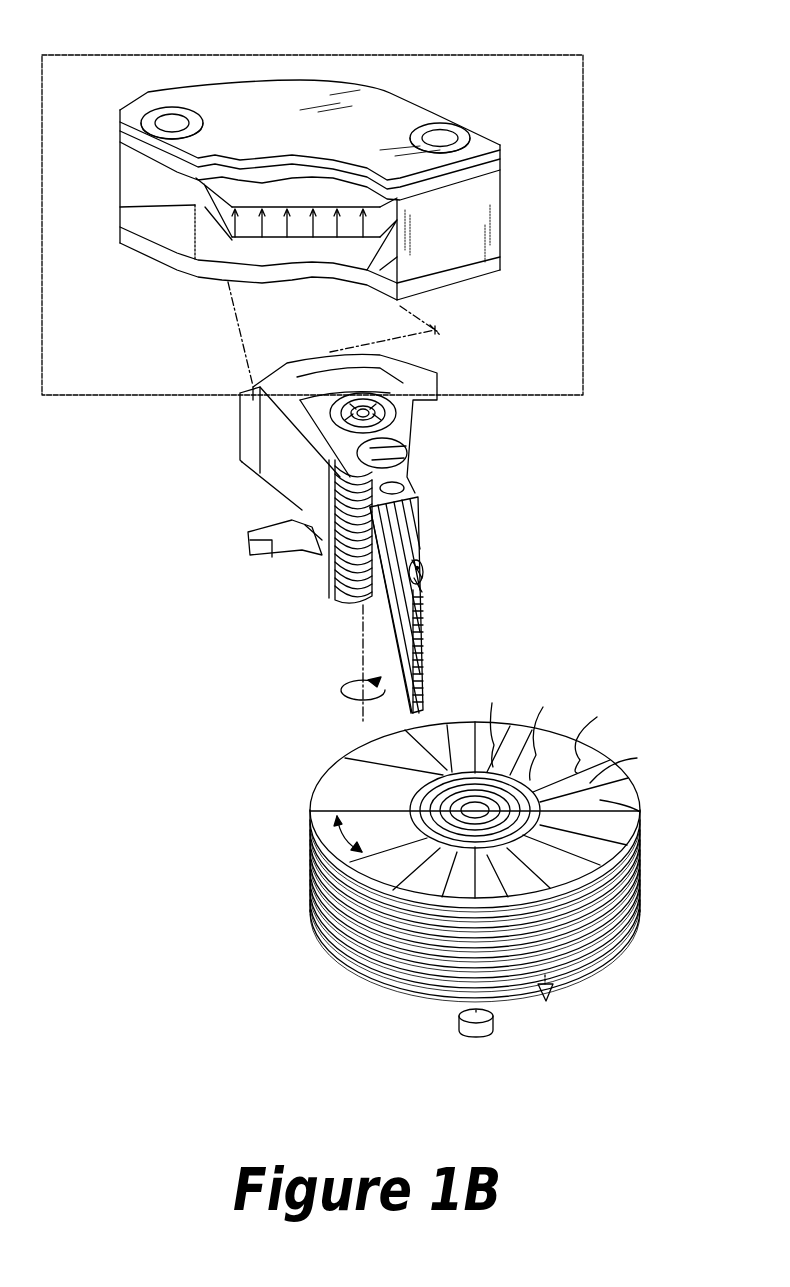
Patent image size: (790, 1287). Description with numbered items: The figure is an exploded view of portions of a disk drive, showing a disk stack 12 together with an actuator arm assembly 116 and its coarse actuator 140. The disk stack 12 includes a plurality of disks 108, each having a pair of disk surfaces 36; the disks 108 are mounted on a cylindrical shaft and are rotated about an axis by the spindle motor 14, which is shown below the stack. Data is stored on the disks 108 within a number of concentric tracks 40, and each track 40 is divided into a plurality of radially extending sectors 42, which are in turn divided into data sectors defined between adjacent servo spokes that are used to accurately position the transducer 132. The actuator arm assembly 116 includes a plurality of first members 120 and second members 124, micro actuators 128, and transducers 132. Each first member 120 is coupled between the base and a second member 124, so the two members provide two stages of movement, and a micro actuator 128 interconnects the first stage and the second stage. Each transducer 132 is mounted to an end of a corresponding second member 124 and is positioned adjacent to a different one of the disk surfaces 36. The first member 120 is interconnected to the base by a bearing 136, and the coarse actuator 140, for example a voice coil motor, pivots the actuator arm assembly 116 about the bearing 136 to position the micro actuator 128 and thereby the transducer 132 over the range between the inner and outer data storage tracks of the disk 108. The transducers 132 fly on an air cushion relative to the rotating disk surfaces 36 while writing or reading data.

The disk stack 12 is at (317, 764).
The spindle motor 14 is at (460, 1029).
The disk surfaces 36 is at (620, 825).
The concentric tracks 40 is at (578, 727).
The radially extending sectors 42 is at (316, 848).
The disk 108 is at (554, 1008).
The actuator arm assembly 116 is at (556, 470).
The first member 120 is at (415, 535).
The second member 124 is at (424, 580).
The micro actuator 128 is at (420, 567).
The transducer 132 is at (424, 590).
The bearing 136 is at (393, 410).
The coarse actuator 140 is at (583, 205).